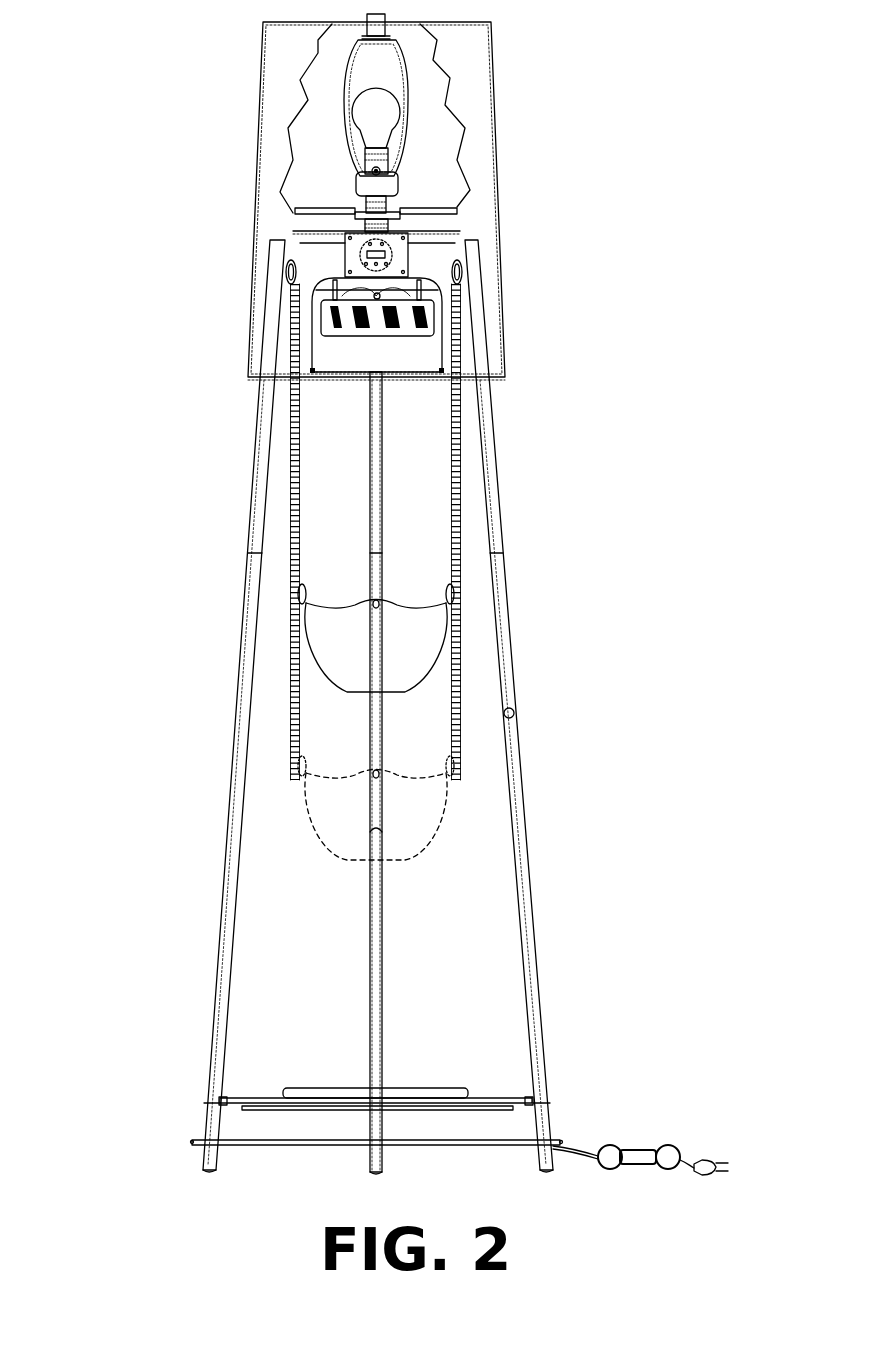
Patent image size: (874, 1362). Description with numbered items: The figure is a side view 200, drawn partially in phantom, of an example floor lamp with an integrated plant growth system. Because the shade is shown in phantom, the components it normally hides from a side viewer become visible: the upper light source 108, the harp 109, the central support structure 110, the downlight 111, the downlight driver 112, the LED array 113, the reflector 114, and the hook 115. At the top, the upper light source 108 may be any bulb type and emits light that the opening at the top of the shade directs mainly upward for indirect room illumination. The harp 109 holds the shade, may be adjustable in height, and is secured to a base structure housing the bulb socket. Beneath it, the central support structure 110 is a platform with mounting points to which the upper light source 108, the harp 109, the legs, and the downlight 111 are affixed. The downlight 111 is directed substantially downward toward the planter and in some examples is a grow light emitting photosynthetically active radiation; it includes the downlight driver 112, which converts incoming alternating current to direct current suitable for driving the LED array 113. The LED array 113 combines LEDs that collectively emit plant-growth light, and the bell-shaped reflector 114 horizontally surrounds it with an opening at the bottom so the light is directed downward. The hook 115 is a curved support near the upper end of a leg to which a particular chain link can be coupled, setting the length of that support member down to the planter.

The side view 200 is at (130, 68).
The upper light source 108 is at (397, 108).
The harp 109 is at (408, 82).
The central support structure 110 is at (440, 208).
The downlight 111 is at (340, 243).
The downlight driver 112 is at (355, 258).
The LED array 113 is at (432, 320).
The reflector 114 is at (313, 343).
The hook 115 is at (467, 262).